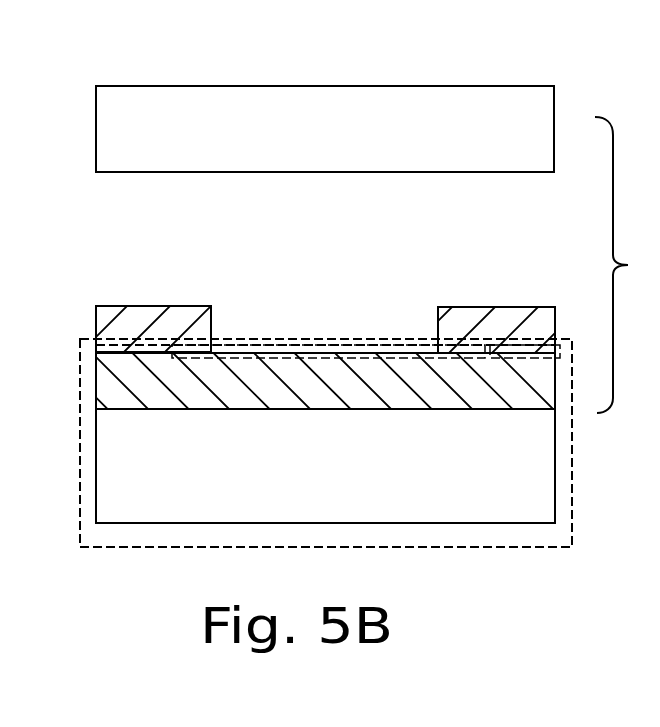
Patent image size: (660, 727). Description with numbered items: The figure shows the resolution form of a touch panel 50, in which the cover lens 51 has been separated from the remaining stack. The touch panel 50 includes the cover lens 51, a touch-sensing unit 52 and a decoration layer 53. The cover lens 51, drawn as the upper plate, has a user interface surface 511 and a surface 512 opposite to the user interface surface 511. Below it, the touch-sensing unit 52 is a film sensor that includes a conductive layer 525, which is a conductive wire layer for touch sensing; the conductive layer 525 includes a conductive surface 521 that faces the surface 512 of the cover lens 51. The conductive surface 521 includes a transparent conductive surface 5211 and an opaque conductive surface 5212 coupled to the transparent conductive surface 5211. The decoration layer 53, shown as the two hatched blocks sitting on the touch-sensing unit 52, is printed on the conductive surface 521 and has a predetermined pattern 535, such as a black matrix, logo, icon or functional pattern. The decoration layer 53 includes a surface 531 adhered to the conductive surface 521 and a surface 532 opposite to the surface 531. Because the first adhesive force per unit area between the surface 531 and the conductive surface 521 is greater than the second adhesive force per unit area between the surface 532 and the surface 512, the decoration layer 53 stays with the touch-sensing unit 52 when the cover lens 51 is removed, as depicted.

The touch panel 50 is at (543, 59).
The cover lens 51 is at (132, 132).
The user interface surface 511 is at (257, 86).
The surface 512 is at (268, 173).
The touch-sensing unit 52 is at (80, 499).
The conductive surface 521 is at (283, 352).
The transparent conductive surface 5211 is at (240, 347).
The opaque conductive surface 5212 is at (514, 349).
The conductive layer 525 is at (405, 388).
The decoration layer 53 is at (298, 305).
The surface 531 is at (117, 353).
The surface 532 is at (147, 306).
The predetermined pattern 535 is at (468, 305).